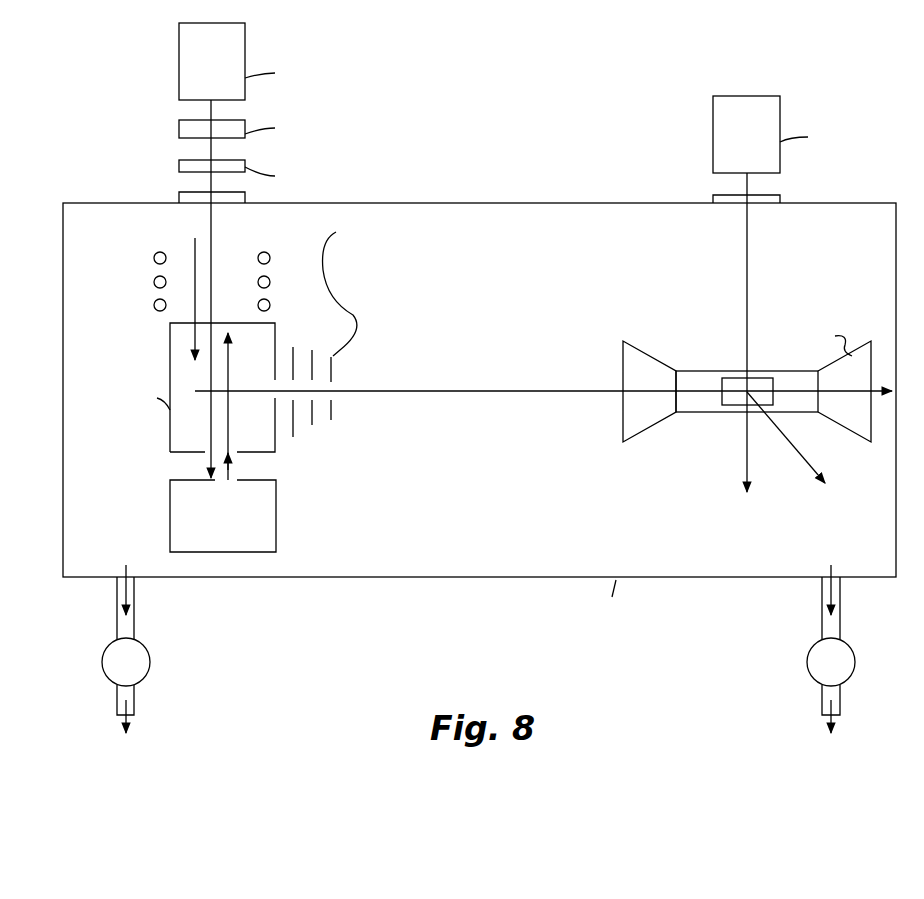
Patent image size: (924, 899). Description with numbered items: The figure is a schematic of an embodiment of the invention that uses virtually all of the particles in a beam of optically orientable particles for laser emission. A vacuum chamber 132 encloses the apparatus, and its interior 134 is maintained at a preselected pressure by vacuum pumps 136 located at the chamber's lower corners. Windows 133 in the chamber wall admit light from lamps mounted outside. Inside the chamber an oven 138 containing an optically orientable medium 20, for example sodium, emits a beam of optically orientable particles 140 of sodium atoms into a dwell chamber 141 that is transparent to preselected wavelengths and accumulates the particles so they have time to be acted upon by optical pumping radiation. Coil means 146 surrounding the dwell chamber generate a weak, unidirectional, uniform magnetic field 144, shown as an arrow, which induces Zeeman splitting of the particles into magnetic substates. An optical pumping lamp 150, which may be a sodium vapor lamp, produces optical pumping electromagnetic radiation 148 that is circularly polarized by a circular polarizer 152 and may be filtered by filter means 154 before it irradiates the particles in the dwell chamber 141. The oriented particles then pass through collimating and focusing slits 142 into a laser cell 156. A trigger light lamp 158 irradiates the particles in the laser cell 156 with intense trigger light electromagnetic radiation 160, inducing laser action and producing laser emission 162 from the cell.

The optically orientable medium 20 is at (241, 508).
The vacuum chamber 132 is at (692, 578).
The window 133 is at (245, 198).
The interior 134 is at (522, 543).
The vacuum pumps 136 is at (143, 648).
The oven 138 is at (276, 528).
The beam of optically orientable particles 140 is at (232, 468).
The dwell chamber 141 is at (170, 436).
The collimating and focusing slits 142 is at (312, 353).
The unidirectional uniform magnetic field 144 is at (195, 240).
The coil means 146 is at (154, 305).
The optical pumping electromagnetic radiation 148 is at (207, 107).
The optical pumping lamp 150 is at (179, 50).
The circular polarizer 152 is at (179, 130).
The filter means 154 is at (179, 163).
The laser cell 156 is at (655, 358).
The trigger light lamp 158 is at (745, 96).
The trigger light electromagnetic radiation 160 is at (747, 251).
The laser emission 162 is at (803, 460).